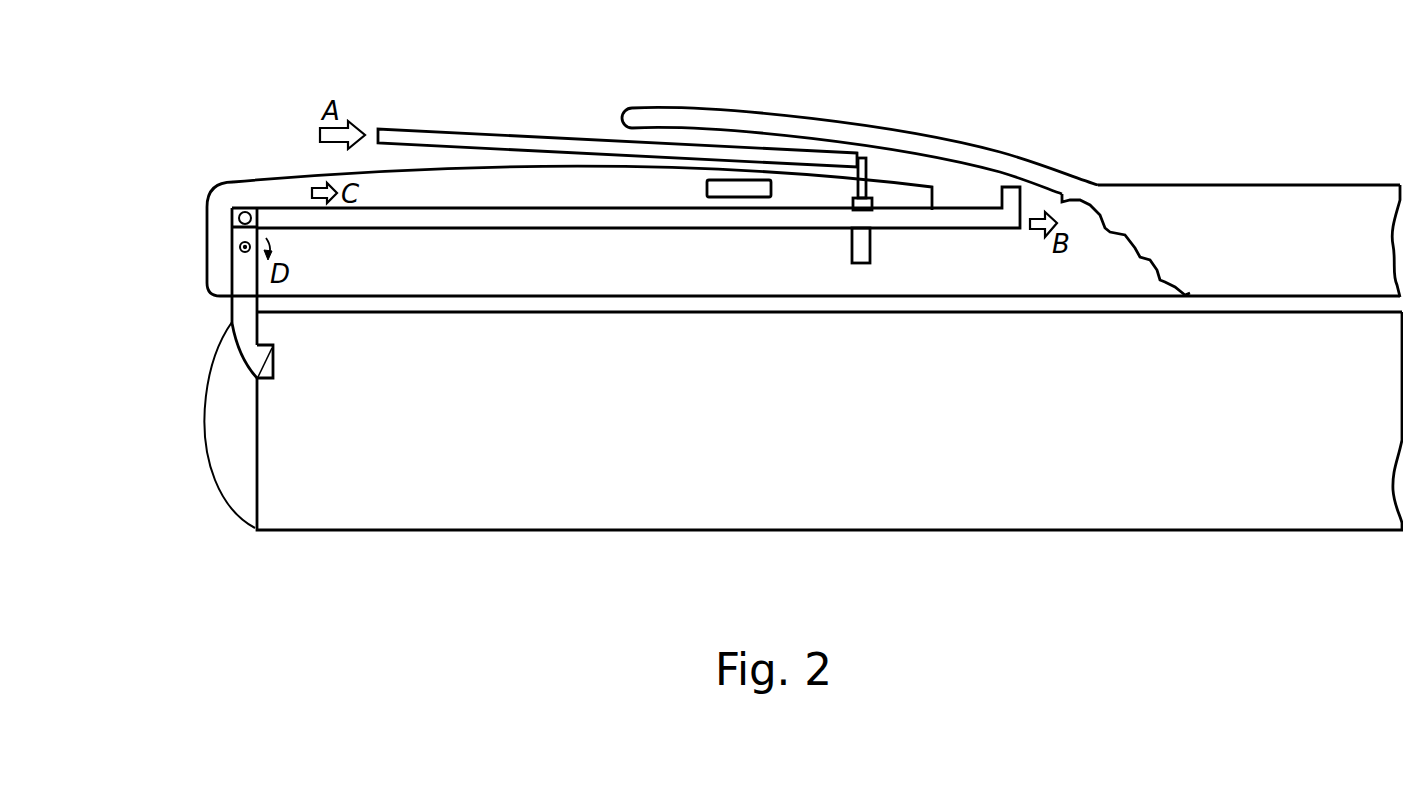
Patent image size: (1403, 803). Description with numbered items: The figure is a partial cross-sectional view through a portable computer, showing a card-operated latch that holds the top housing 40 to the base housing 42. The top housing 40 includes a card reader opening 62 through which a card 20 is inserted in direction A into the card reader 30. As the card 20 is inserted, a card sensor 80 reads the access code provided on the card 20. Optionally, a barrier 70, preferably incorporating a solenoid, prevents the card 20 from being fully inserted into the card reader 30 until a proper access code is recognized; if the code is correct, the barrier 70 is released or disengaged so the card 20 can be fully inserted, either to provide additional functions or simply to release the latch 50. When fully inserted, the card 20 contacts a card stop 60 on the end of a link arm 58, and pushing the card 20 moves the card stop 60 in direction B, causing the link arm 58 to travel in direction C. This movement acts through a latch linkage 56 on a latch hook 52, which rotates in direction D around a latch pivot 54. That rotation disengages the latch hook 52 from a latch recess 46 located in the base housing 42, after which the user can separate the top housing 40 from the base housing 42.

The card 20 is at (475, 130).
The card reader 30 is at (601, 119).
The top housing 40 is at (1162, 205).
The base housing 42 is at (1153, 512).
The latch recess 46 is at (268, 374).
The latch 50 is at (137, 340).
The latch hook 52 is at (233, 353).
The latch pivot 54 is at (241, 251).
The latch linkage 56 is at (240, 213).
The link arm 58 is at (273, 217).
The card stop 60 is at (1008, 192).
The card reader opening 62 is at (710, 107).
The barrier 70 is at (853, 203).
The card sensor 80 is at (740, 187).